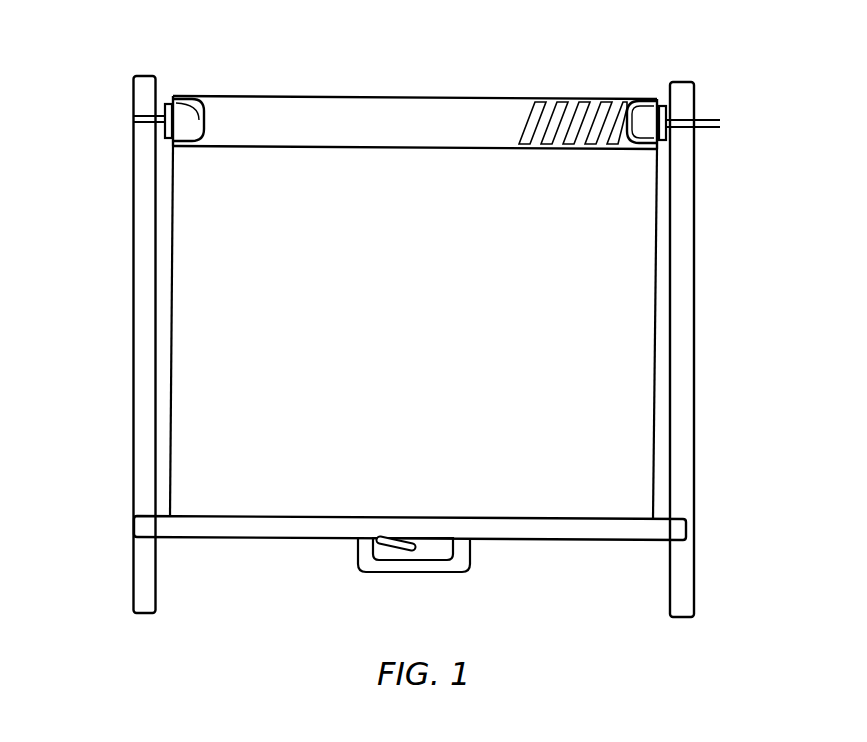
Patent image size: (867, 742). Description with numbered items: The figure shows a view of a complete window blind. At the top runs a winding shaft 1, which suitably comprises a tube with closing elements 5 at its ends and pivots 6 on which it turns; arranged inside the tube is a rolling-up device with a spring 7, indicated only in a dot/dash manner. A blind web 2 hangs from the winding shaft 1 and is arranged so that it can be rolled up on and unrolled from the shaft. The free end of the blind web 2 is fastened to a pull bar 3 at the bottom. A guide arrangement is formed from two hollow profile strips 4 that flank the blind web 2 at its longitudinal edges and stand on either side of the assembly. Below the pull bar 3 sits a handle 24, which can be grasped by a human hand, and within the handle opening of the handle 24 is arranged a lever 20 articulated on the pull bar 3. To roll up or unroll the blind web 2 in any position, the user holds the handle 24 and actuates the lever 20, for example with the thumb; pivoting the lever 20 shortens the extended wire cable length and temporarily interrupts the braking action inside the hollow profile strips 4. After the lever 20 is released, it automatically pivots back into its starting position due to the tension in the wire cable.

The winding shaft 1 is at (430, 97).
The blind web 2 is at (605, 307).
The pull bar 3 is at (535, 532).
The hollow profile strips 4 is at (140, 368).
The closing elements 5 is at (196, 99).
The pivots 6 is at (130, 119).
The spring 7 is at (558, 98).
The lever 20 is at (398, 548).
The handle 24 is at (428, 572).